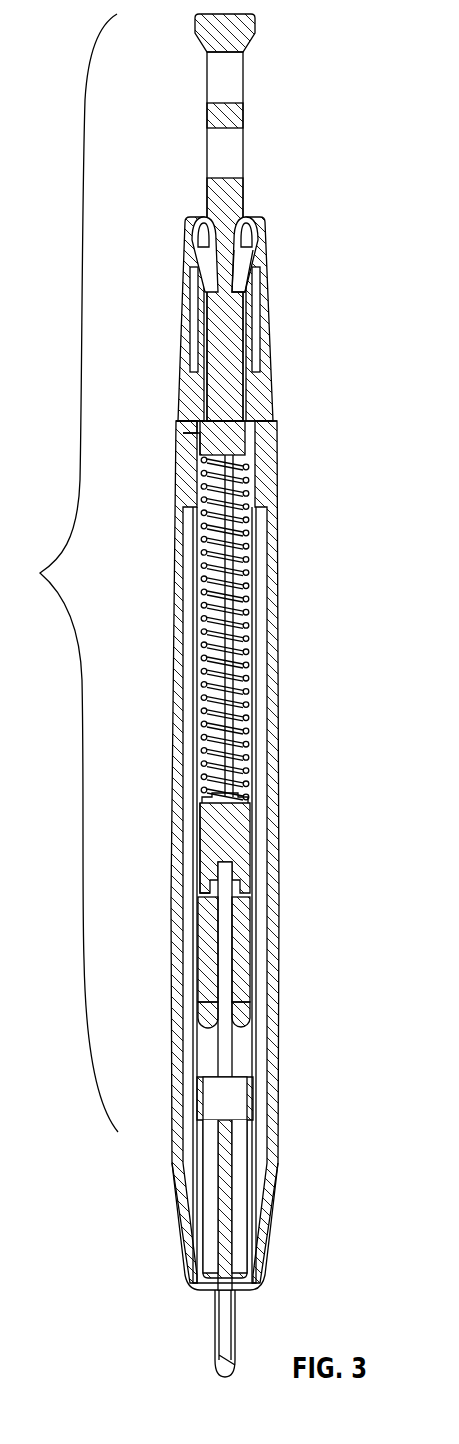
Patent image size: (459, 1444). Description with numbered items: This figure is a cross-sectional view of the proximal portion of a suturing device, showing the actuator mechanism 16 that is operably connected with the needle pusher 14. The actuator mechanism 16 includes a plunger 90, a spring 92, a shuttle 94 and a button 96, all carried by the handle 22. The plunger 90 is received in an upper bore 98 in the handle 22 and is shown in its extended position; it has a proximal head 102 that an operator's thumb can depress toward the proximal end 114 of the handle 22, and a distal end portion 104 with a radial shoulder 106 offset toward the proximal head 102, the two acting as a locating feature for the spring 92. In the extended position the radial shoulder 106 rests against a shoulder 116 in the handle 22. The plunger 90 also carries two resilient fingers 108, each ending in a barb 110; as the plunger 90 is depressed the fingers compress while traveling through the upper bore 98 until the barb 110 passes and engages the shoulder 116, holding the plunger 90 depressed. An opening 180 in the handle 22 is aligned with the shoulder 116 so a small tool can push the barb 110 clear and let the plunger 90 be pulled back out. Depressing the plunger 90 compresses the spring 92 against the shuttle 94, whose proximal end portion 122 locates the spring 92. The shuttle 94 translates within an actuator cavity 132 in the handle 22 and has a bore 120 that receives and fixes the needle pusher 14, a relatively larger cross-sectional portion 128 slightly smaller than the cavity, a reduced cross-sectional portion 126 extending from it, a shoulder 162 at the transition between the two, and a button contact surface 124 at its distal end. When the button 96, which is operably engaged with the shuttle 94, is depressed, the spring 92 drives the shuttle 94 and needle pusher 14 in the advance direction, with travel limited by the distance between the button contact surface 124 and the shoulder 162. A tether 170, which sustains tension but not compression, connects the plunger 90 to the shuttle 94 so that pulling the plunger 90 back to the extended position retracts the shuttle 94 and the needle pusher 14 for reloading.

The actuator mechanism 16 is at (65, 573).
The proximal head 102 is at (255, 24).
The plunger 90 is at (235, 153).
The radial shoulder 106 is at (270, 408).
The upper bore 98 is at (240, 318).
The proximal end 114 is at (197, 228).
The barb 110 is at (250, 228).
The resilient finger 108 is at (245, 268).
The opening 180 is at (178, 423).
The shoulder 116 is at (190, 437).
The distal end portion 104 is at (226, 445).
The handle 22 is at (267, 533).
The tether 170 is at (248, 575).
The actuator cavity 132 is at (198, 740).
The spring 92 is at (255, 478).
The proximal end portion 122 is at (250, 800).
The shuttle 94 is at (240, 840).
The relatively larger cross-sectional portion 128 is at (205, 845).
The reduced cross-sectional portion 126 is at (233, 950).
The bore 120 is at (220, 935).
The shoulder 162 is at (255, 908).
The button 96 is at (245, 1010).
The button contact surface 124 is at (200, 1022).
The needle pusher 14 is at (240, 1280).